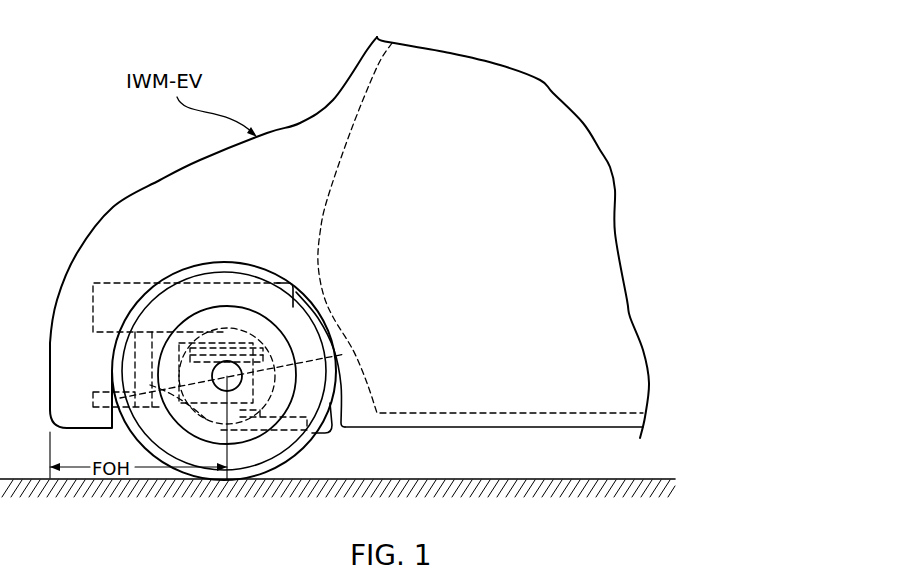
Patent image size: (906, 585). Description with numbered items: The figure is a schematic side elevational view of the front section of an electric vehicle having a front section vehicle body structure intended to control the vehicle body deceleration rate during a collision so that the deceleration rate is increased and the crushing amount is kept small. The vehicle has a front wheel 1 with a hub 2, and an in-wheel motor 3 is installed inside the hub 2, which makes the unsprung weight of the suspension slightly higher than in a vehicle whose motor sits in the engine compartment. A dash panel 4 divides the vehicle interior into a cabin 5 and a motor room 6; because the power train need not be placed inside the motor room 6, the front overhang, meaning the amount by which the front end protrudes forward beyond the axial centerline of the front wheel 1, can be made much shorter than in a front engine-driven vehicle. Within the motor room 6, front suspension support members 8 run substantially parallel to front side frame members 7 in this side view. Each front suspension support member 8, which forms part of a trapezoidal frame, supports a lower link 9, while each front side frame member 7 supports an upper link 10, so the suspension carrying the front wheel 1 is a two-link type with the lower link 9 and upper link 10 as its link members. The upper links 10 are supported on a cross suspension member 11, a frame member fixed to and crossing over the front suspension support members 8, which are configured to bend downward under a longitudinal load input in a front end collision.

The front wheel 1 is at (221, 272).
The hub 2 is at (262, 437).
The in-wheel motor 3 is at (238, 330).
The dash panel 4 is at (320, 222).
The cabin 5 is at (493, 221).
The motor room 6 is at (191, 220).
The front side frame member 7 is at (207, 281).
The front suspension support member 8 is at (157, 378).
The lower link 9 is at (205, 408).
The upper link 10 is at (297, 314).
The cross suspension member 11 is at (260, 427).